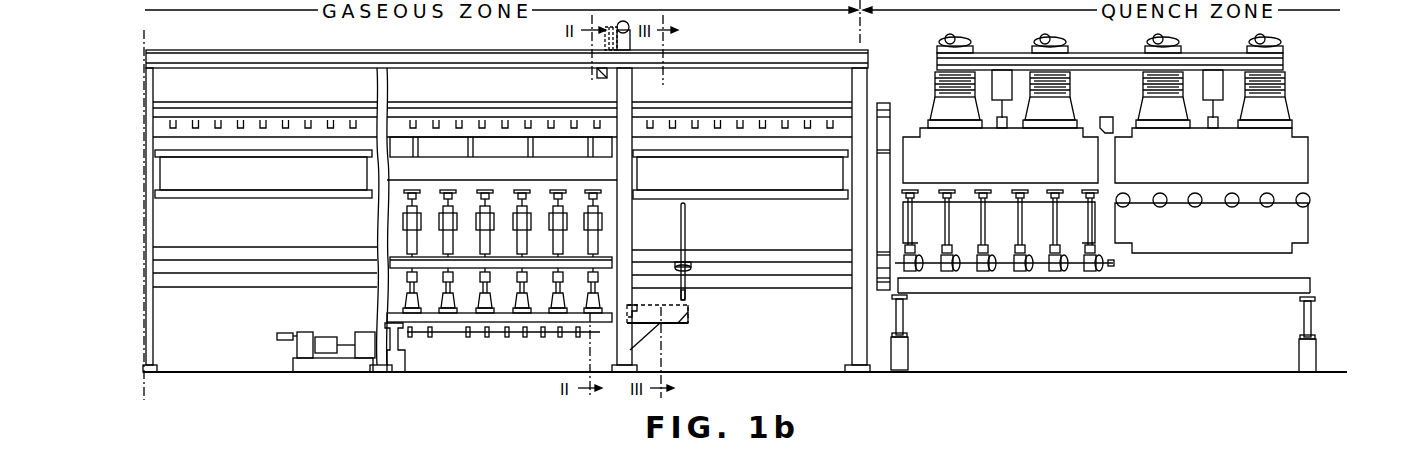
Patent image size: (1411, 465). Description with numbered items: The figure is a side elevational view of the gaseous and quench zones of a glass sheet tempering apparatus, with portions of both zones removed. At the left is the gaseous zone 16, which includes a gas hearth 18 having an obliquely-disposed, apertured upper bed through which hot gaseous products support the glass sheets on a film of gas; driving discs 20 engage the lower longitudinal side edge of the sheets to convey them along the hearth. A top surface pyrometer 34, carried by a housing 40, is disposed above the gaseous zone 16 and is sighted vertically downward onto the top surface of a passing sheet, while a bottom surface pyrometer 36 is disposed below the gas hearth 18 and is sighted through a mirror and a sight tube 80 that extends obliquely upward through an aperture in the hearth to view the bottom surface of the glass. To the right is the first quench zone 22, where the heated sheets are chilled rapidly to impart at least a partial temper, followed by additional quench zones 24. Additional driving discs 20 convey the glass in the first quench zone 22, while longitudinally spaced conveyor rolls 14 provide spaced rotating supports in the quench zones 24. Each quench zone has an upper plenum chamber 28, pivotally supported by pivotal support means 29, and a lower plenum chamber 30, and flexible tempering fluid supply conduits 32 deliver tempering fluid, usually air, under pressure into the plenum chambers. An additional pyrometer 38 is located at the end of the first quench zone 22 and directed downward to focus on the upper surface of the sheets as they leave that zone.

The conveyor rolls 14 is at (1195, 206).
The gaseous zone 16 is at (299, 46).
The gas hearth 18 is at (688, 231).
The driving discs 20 is at (444, 190).
The first quench zone 22 is at (988, 45).
The additional quench zones 24 is at (1300, 46).
The upper plenum chamber 28 is at (1010, 161).
The pivotal support means 29 is at (1195, 81).
The lower plenum chamber 30 is at (1102, 229).
The flexible tempering fluid supply conduits 32 is at (1110, 70).
The top surface pyrometer 34 is at (615, 74).
The bottom surface pyrometer 36 is at (634, 308).
The additional pyrometer 38 is at (1123, 114).
The housing 40 is at (603, 74).
The sight tube 80 is at (688, 300).